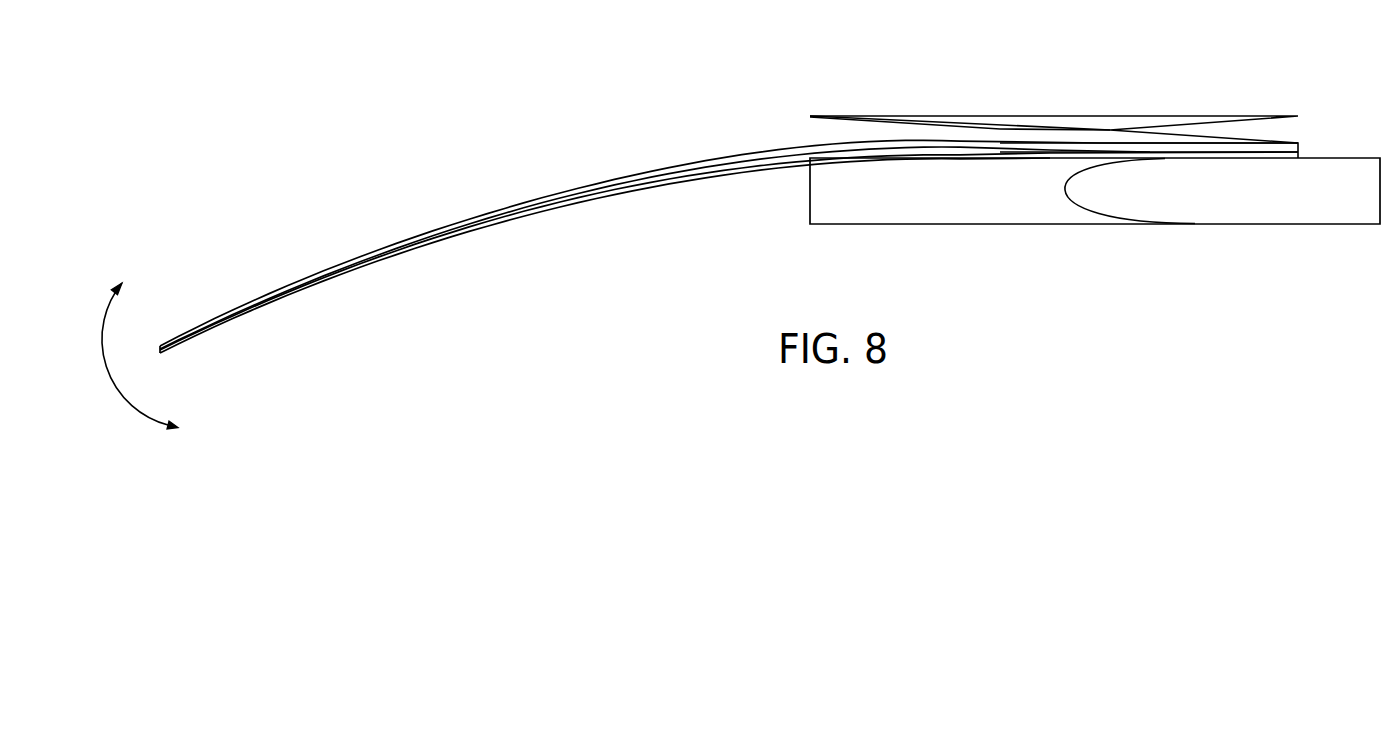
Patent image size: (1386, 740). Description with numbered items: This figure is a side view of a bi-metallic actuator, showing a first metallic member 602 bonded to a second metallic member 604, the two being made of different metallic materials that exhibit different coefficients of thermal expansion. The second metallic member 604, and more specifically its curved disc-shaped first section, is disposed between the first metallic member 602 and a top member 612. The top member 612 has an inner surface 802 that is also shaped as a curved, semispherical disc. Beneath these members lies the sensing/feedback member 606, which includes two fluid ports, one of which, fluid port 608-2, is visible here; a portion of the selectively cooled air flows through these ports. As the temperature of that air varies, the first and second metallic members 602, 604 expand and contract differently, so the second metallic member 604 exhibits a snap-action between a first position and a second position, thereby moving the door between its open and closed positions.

The second metallic member 604 is at (726, 159).
The top member 612 is at (1072, 116).
The inner surface 802 is at (872, 124).
The first metallic member 602 is at (1298, 156).
The sensing/feedback member 606 is at (933, 205).
The fluid port 608-2 is at (1328, 213).